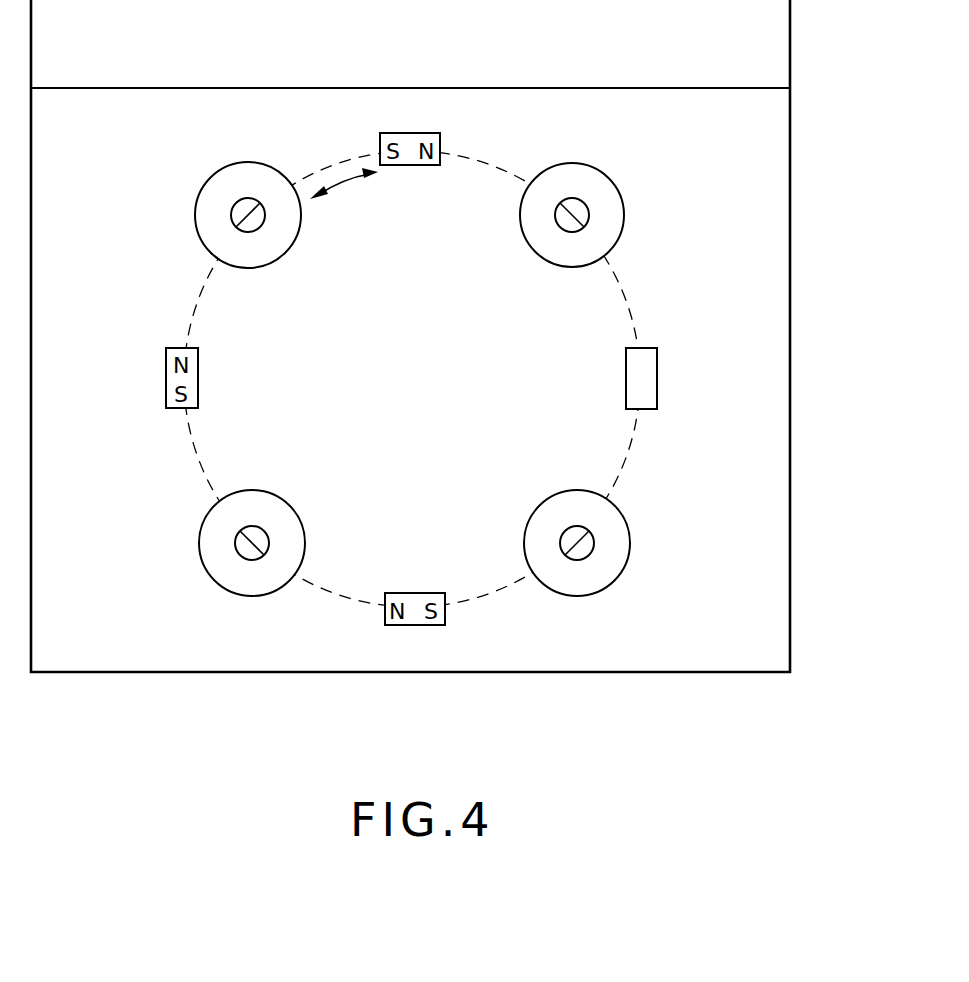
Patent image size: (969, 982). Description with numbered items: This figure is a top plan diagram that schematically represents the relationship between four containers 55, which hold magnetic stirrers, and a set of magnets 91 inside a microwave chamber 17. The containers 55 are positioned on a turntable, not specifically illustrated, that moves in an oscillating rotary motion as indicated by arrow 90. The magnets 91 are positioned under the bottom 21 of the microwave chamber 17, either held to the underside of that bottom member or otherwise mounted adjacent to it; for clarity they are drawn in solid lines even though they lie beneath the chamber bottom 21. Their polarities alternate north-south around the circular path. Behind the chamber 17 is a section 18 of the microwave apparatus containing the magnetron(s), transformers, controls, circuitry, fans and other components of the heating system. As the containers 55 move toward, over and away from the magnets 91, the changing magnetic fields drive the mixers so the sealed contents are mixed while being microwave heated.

The microwave chamber 17 is at (772, 519).
The section of the microwave apparatus 18 is at (760, 27).
The bottom of microwave chamber 21 is at (698, 602).
The container 55 is at (624, 210).
The arrow 90 is at (340, 183).
The magnet 91 is at (657, 380).